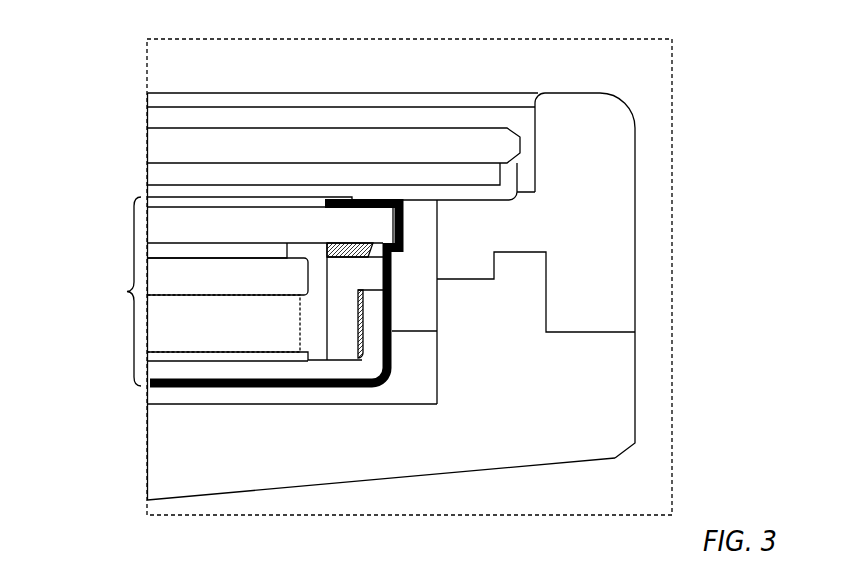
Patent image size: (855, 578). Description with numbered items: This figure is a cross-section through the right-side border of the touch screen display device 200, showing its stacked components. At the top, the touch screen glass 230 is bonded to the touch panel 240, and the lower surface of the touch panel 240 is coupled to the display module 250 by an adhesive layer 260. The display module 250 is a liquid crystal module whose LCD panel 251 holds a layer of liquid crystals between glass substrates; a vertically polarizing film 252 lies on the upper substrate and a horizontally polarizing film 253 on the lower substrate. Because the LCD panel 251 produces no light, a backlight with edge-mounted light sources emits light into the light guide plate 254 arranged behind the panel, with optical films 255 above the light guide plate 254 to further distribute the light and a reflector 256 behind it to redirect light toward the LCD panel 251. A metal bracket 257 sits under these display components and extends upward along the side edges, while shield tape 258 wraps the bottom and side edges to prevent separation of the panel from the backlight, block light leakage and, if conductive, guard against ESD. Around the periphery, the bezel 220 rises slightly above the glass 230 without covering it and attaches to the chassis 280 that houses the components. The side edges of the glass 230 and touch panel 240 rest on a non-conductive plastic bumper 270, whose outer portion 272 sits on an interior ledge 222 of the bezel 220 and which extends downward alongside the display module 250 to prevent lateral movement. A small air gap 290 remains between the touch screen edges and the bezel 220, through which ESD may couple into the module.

The touch screen display device 200 is at (227, 70).
The bezel 220 is at (598, 204).
The interior ledge 222 is at (507, 207).
The touch screen glass 230 is at (365, 156).
The touch panel 240 is at (157, 175).
The display module 250 is at (114, 291).
The liquid crystal display panel 251 is at (287, 236).
The vertically polarizing film 252 is at (158, 205).
The horizontally polarizing film 253 is at (158, 250).
The light guide plate 254 is at (258, 333).
The optical films 255 is at (302, 287).
The reflector 256 is at (158, 355).
The metal bracket 257 is at (157, 371).
The shield tape 258 is at (163, 392).
The adhesive layer 260 is at (157, 190).
The bumper 270 is at (427, 292).
The outer portion 272 is at (451, 193).
The chassis 280 is at (558, 409).
The air gap 290 is at (527, 148).